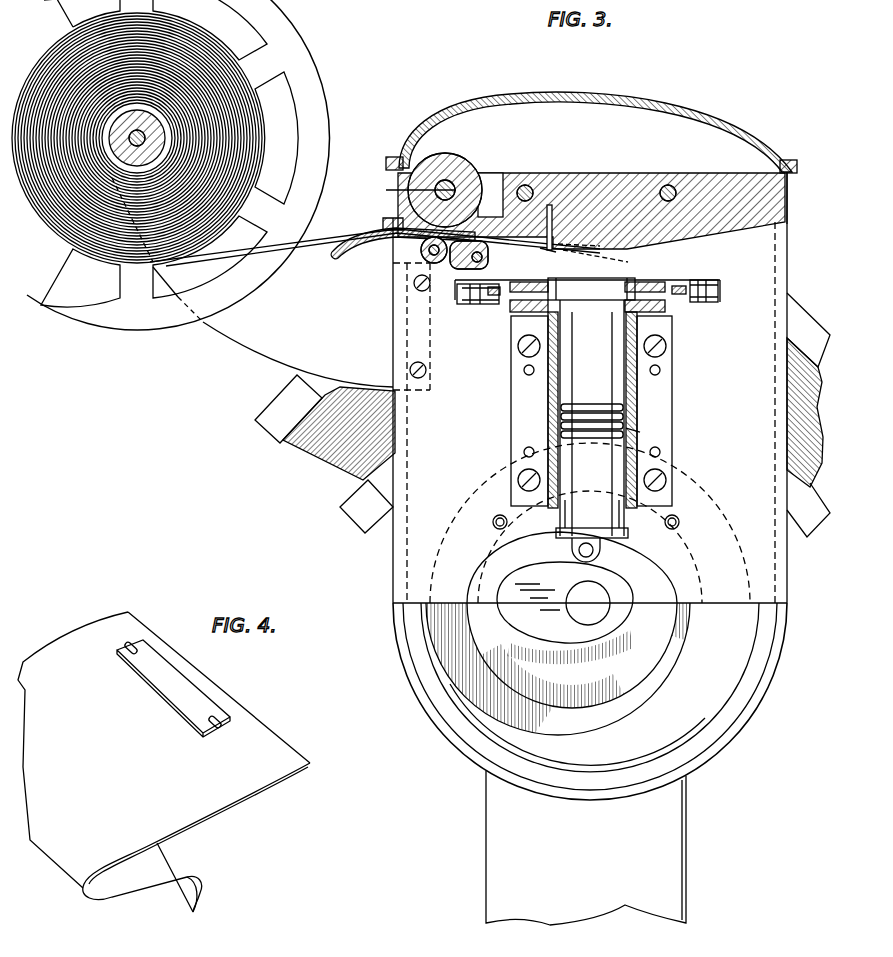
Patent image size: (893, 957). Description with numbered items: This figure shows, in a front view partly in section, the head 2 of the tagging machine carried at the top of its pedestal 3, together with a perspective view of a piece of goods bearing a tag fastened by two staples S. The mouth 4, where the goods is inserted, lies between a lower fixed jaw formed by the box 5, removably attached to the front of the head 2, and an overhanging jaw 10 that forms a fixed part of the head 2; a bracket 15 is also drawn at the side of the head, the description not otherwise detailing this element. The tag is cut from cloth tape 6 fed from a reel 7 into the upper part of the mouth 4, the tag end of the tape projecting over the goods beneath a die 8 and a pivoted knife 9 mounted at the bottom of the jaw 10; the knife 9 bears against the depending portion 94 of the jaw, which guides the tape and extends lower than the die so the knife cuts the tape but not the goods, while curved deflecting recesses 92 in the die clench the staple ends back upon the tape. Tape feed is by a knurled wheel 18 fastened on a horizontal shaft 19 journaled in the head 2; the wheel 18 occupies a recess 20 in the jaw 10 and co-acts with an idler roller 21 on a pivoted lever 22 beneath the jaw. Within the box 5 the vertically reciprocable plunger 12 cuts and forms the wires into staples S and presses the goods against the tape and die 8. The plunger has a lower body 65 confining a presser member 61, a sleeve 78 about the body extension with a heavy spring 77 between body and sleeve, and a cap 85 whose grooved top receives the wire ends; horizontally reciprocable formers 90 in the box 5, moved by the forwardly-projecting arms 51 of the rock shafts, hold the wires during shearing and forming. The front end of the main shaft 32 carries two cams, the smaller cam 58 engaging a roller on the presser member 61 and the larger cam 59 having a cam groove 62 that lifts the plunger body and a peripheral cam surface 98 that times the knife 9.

In FIG. 3, the head 2 is at (789, 283).
In FIG. 3, the pedestal 3 is at (689, 857).
In FIG. 3, the mouth 4 is at (695, 262).
In FIG. 3, the box 5 is at (640, 391).
In FIG. 3, the cloth tape 6 is at (312, 240).
In FIG. 4, the cloth tape 6 is at (186, 704).
In FIG. 3, the reel 7 is at (310, 78).
In FIG. 3, the die 8 is at (600, 237).
In FIG. 3, the pivoted knife 9 is at (548, 232).
In FIG. 3, the overhanging jaw 10 is at (789, 222).
In FIG. 3, the plunger 12 is at (592, 419).
In FIG. 3, the clamp bracket 15 is at (355, 526).
In FIG. 3, the knurled wheel 18 is at (462, 165).
In FIG. 3, the horizontal shaft 19 is at (386, 190).
In FIG. 3, the recess 20 is at (492, 184).
In FIG. 3, the idler roller 21 is at (433, 260).
In FIG. 3, the pivoted lever 22 is at (357, 255).
In FIG. 3, the main shaft 32 is at (588, 603).
In FIG. 3, the forwardly-projecting arm 51 is at (702, 296).
In FIG. 3, the cam 58 is at (615, 592).
In FIG. 3, the cam 59 is at (723, 683).
In FIG. 3, the presser member 61 is at (598, 556).
In FIG. 3, the cam groove 62 is at (642, 691).
In FIG. 3, the lower body 65 is at (592, 513).
In FIG. 3, the heavy spring 77 is at (616, 431).
In FIG. 3, the sleeve 78 is at (582, 391).
In FIG. 3, the plunger cap 85 is at (588, 318).
In FIG. 3, the formers 90 is at (643, 282).
In FIG. 3, the deflecting recesses 92 is at (577, 251).
In FIG. 3, the depending portion 94 is at (546, 249).
In FIG. 3, the peripheral cam surface 98 is at (505, 750).
In FIG. 4, the staples S is at (142, 650).